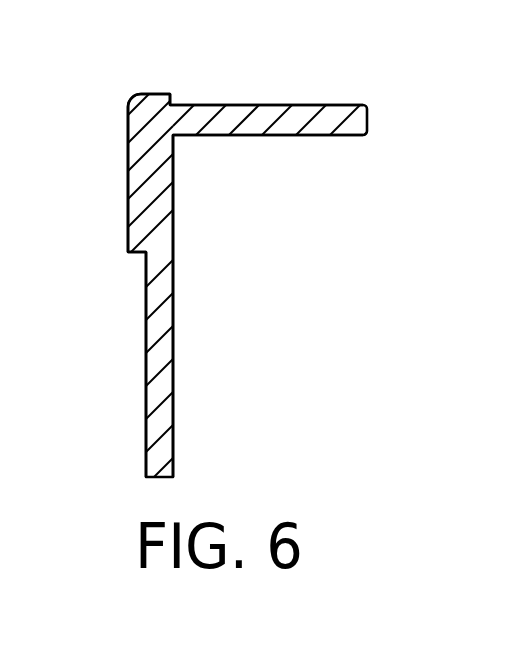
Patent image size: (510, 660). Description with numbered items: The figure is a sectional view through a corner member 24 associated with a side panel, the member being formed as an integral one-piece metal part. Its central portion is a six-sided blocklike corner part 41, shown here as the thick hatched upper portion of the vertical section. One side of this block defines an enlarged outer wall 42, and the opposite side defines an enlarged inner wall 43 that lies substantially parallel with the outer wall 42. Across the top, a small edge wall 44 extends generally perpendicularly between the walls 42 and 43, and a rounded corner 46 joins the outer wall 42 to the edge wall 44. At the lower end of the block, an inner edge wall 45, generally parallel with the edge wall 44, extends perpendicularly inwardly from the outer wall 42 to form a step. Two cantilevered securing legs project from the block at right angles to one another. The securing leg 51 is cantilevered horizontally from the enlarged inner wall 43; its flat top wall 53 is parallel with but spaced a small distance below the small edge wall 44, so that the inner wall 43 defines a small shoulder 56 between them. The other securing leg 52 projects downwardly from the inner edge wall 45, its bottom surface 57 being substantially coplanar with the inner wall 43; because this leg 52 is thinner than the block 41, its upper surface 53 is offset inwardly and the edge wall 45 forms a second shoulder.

The corner member 24 is at (117, 146).
The blocklike corner part 41 is at (160, 193).
The enlarged outer wall 42 is at (128, 197).
The enlarged inner wall 43 is at (168, 230).
The small edge wall 44 is at (157, 93).
The inner edge wall 45 is at (140, 254).
The rounded corner 46 is at (130, 98).
The securing leg 51 is at (265, 112).
The securing leg 52 is at (162, 357).
The top wall 53 is at (332, 104).
The shoulder 56 is at (175, 100).
The bottom surface 57 is at (173, 306).